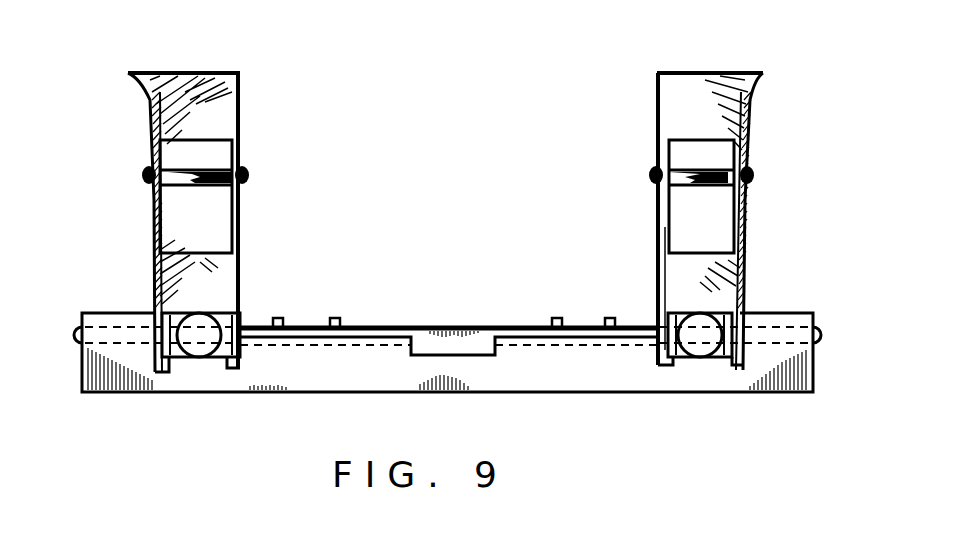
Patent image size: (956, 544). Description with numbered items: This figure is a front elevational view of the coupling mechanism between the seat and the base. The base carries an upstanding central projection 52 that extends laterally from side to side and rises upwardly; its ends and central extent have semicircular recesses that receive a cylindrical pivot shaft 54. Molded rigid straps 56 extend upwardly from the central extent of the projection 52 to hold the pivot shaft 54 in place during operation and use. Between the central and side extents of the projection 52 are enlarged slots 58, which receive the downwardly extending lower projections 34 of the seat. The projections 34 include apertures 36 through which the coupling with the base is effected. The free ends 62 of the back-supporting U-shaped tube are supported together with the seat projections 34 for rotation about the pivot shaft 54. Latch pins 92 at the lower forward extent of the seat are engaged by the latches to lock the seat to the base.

The lower projections 34 is at (148, 100).
The apertures 36 is at (177, 233).
The upstanding central projection 52 is at (320, 378).
The cylindrical pivot shaft 54 is at (465, 326).
The molded rigid straps 56 is at (335, 318).
The enlarged slots 58 is at (160, 385).
The free ends 62 is at (725, 358).
The latch pins 92 is at (152, 193).